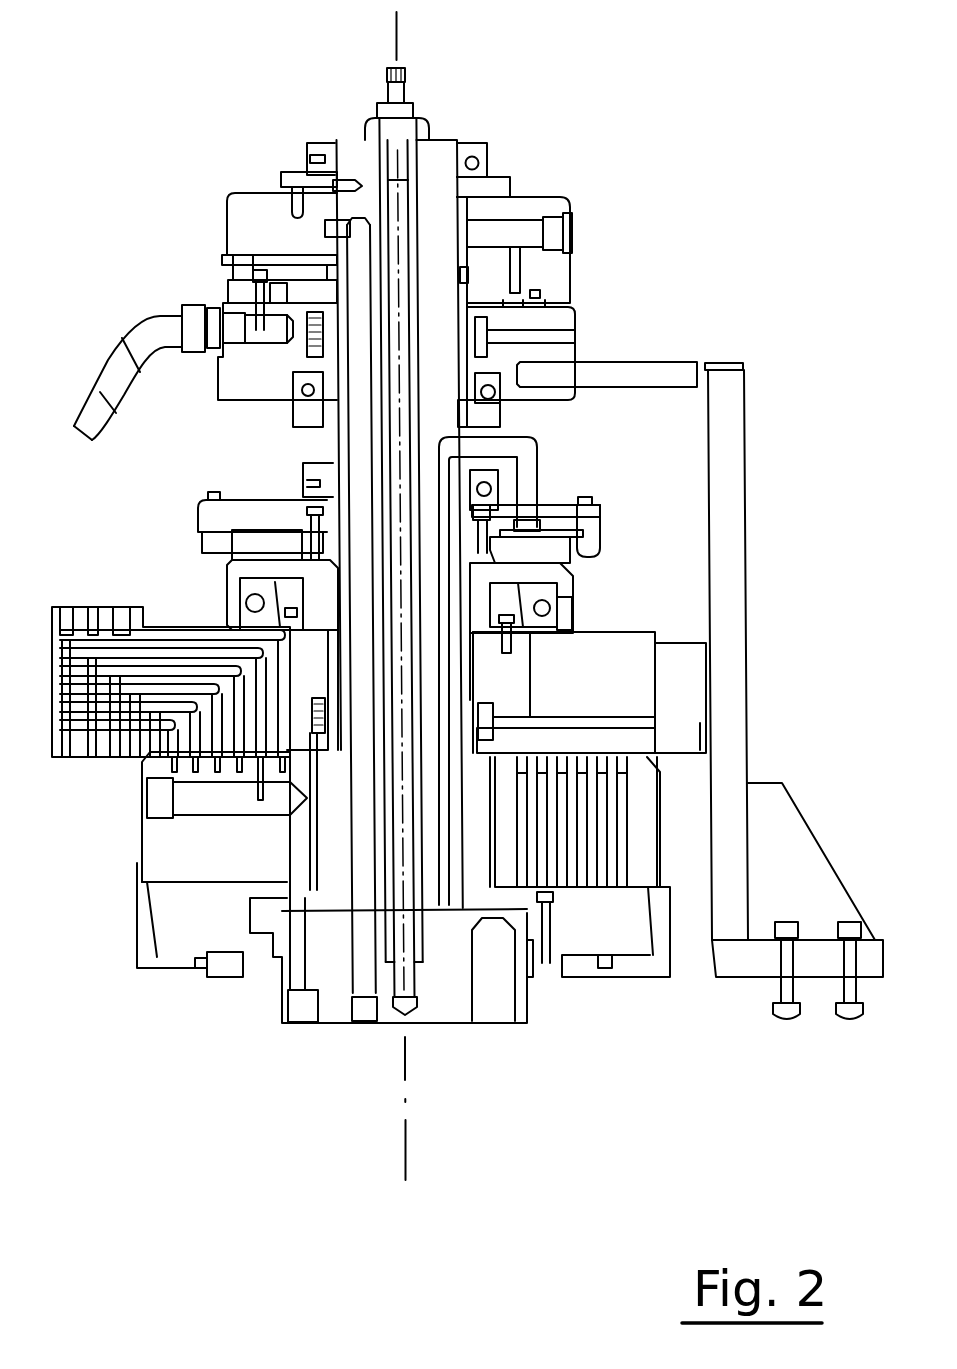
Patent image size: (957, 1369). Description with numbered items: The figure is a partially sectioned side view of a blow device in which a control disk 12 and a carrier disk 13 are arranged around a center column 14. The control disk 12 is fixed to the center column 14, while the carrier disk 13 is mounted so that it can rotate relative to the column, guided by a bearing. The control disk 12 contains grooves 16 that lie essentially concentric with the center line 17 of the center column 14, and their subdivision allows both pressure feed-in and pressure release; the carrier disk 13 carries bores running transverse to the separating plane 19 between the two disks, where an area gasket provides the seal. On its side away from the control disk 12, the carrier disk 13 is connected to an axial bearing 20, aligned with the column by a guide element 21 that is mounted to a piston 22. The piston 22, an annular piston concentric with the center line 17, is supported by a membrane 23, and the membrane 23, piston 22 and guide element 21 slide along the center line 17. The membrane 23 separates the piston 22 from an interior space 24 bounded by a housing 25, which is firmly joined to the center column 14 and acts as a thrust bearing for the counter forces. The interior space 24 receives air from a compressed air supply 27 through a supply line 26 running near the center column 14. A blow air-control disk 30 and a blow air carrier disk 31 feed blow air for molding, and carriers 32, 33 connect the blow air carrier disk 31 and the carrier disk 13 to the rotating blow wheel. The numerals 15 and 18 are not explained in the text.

The control disk 12 is at (153, 850).
The carrier disk 13 is at (625, 653).
The center column 14 is at (437, 138).
The plate 15 is at (510, 712).
The grooves 16 is at (170, 762).
The center line 17 is at (407, 1140).
The cooling element 18 is at (215, 712).
The separating plane 19 is at (640, 750).
The axial bearing 20 is at (550, 594).
The guide element 21 is at (575, 612).
The piston 22 is at (557, 553).
The membrane 23 is at (560, 513).
The interior space 24 is at (545, 512).
The housing 25 is at (600, 523).
The supply line 26 is at (527, 440).
The compressed air supply 27 is at (447, 998).
The blow air-control disk 30 is at (237, 216).
The blow air carrier disk 31 is at (237, 392).
The carrier 32 is at (687, 743).
The carrier 33 is at (650, 365).